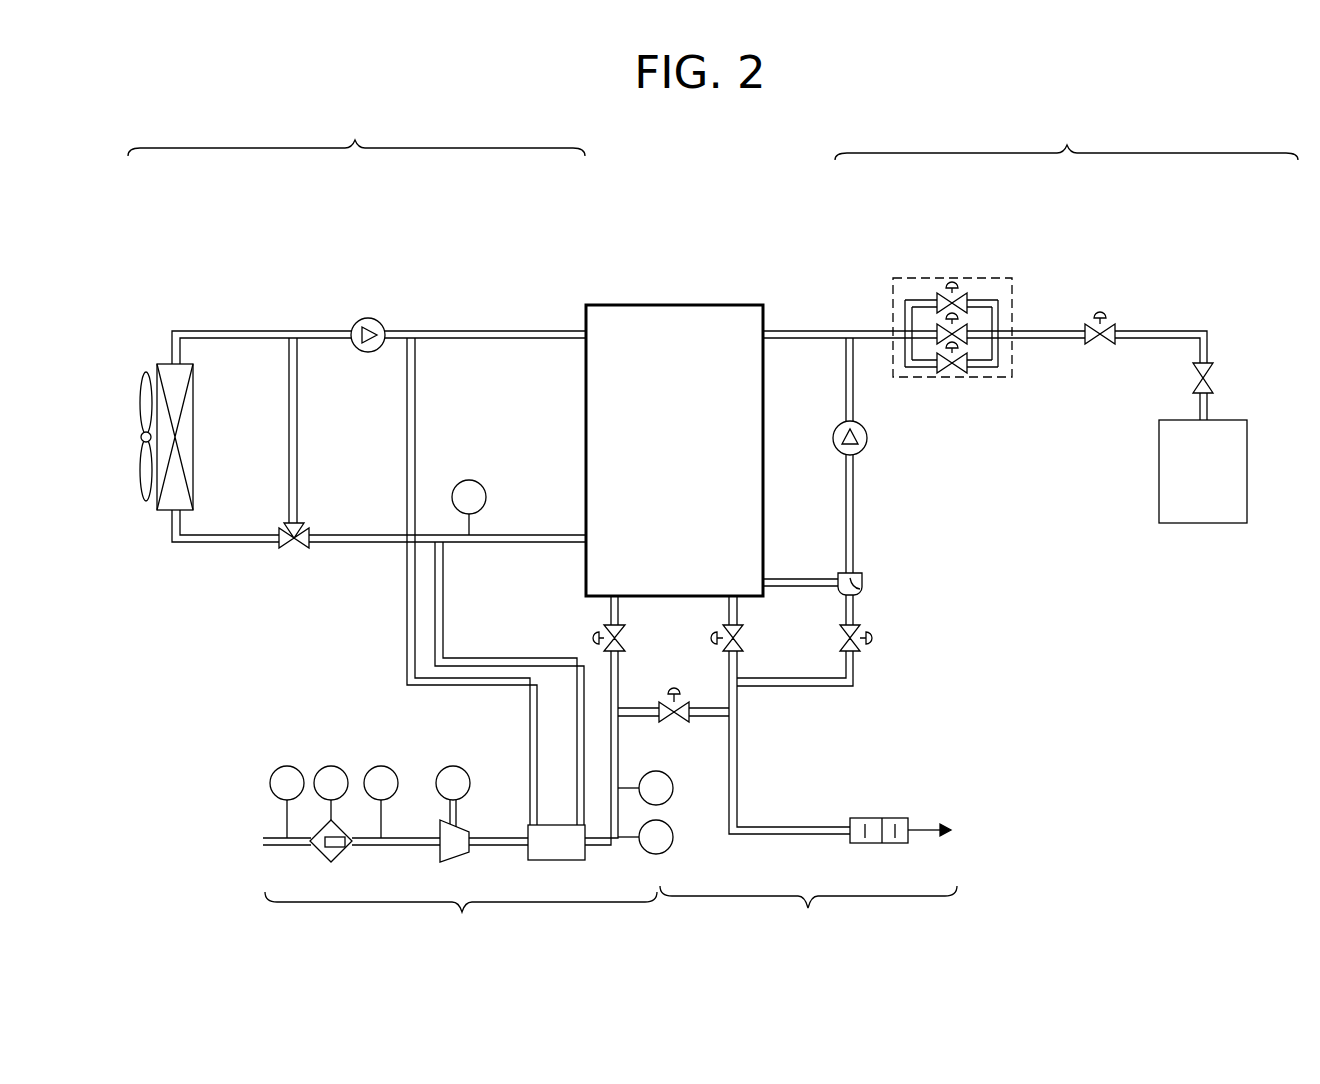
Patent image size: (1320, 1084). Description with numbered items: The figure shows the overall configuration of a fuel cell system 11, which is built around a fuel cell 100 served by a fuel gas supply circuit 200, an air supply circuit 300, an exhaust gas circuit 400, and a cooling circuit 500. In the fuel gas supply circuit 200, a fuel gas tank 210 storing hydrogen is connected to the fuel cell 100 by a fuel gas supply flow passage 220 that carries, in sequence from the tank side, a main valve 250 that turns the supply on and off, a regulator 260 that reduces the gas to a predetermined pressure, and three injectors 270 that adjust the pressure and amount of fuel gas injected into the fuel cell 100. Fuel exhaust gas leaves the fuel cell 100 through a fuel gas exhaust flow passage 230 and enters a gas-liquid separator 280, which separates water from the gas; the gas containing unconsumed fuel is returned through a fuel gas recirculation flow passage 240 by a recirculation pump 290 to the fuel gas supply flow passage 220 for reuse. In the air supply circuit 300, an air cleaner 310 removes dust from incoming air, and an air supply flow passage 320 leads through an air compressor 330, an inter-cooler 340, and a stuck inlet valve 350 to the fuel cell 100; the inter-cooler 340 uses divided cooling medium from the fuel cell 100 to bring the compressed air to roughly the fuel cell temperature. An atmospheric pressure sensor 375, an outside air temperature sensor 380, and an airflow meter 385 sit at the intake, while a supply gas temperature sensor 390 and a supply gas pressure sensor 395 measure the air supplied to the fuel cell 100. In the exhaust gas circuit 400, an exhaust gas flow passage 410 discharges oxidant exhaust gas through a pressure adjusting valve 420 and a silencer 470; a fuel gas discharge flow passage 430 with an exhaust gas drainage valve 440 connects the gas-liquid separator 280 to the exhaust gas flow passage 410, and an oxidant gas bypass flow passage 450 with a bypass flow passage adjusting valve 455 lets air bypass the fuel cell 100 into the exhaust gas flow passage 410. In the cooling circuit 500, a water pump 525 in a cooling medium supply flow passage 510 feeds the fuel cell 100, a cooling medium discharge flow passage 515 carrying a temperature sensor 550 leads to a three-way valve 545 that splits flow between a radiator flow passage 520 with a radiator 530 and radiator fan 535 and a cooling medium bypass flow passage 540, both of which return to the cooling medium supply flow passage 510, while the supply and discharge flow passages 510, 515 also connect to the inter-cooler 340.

The fuel cell system 11 is at (774, 169).
The fuel cell 100 is at (765, 305).
The fuel gas supply circuit 200 is at (1066, 137).
The fuel gas tank 210 is at (1218, 419).
The fuel gas supply flow passage 220 is at (1055, 330).
The fuel gas exhaust flow passage 230 is at (792, 578).
The fuel gas recirculation flow passage 240 is at (855, 488).
The main valve 250 is at (1210, 365).
The regulator 260 is at (1112, 325).
The injectors 270 is at (1010, 279).
The gas-liquid separator 280 is at (866, 585).
The recirculation pump 290 is at (867, 441).
The air supply circuit 300 is at (461, 920).
The air cleaner 310 is at (311, 848).
The air supply flow passage 320 is at (412, 848).
The air compressor 330 is at (437, 824).
The inter-cooler 340 is at (565, 862).
The stuck inlet valve 350 is at (626, 626).
The atmospheric pressure sensor 375 is at (275, 768).
The outside air temperature sensor 380 is at (328, 766).
The airflow meter 385 is at (378, 766).
The supply gas temperature sensor 390 is at (673, 837).
The supply gas pressure sensor 395 is at (673, 788).
The exhaust gas circuit 400 is at (808, 915).
The exhaust gas flow passage 410 is at (787, 827).
The pressure adjusting valve 420 is at (745, 634).
The fuel gas discharge flow passage 430 is at (856, 676).
The exhaust gas drainage valve 440 is at (868, 632).
The oxidant gas bypass flow passage 450 is at (700, 708).
The bypass flow passage adjusting valve 455 is at (668, 694).
The silencer 470 is at (900, 818).
The cooling circuit 500 is at (356, 132).
The cooling medium supply flow passage 510 is at (552, 331).
The cooling medium discharge flow passage 515 is at (358, 535).
The radiator flow passage 520 is at (208, 535).
The water pump 525 is at (376, 318).
The radiator 530 is at (196, 395).
The radiator fan 535 is at (150, 372).
The cooling medium bypass flow passage 540 is at (288, 350).
The three-way valve 545 is at (290, 549).
The temperature sensor 550 is at (470, 480).